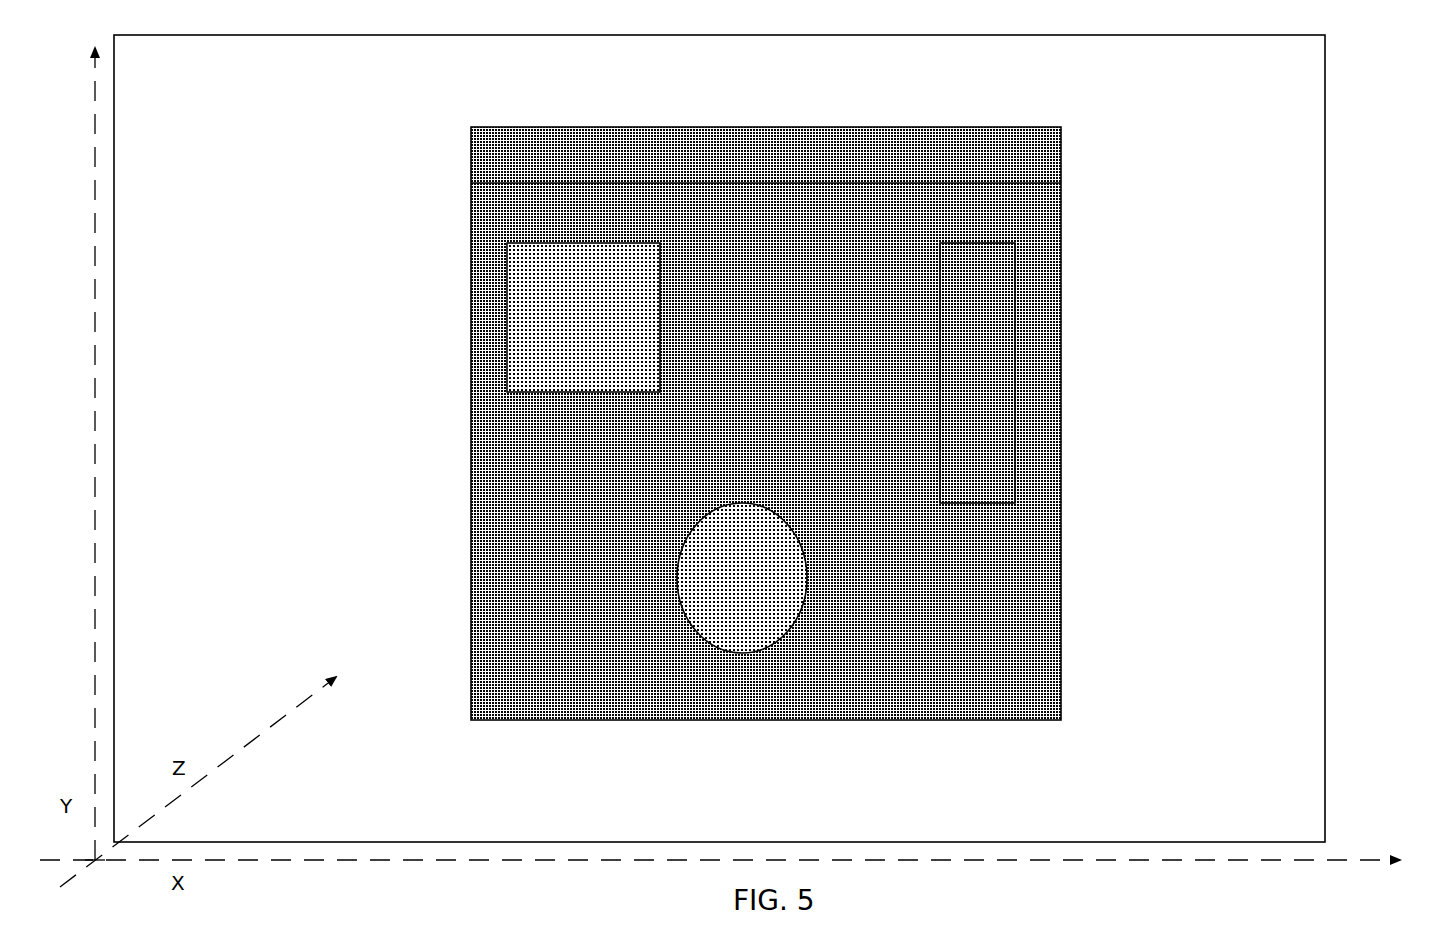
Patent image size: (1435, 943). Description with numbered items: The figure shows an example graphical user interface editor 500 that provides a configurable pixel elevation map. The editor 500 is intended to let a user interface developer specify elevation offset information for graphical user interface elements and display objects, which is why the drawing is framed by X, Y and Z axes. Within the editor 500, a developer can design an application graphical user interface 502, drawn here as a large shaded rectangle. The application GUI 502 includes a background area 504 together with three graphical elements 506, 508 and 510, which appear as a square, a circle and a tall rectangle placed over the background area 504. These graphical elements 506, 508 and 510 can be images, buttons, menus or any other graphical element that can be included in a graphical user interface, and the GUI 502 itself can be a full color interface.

The graphical user interface editor 500 is at (1325, 163).
The application graphical user interface 502 is at (1061, 235).
The background area 504 is at (766, 258).
The graphical element 506 is at (583, 317).
The graphical element 508 is at (742, 578).
The graphical element 510 is at (977, 373).